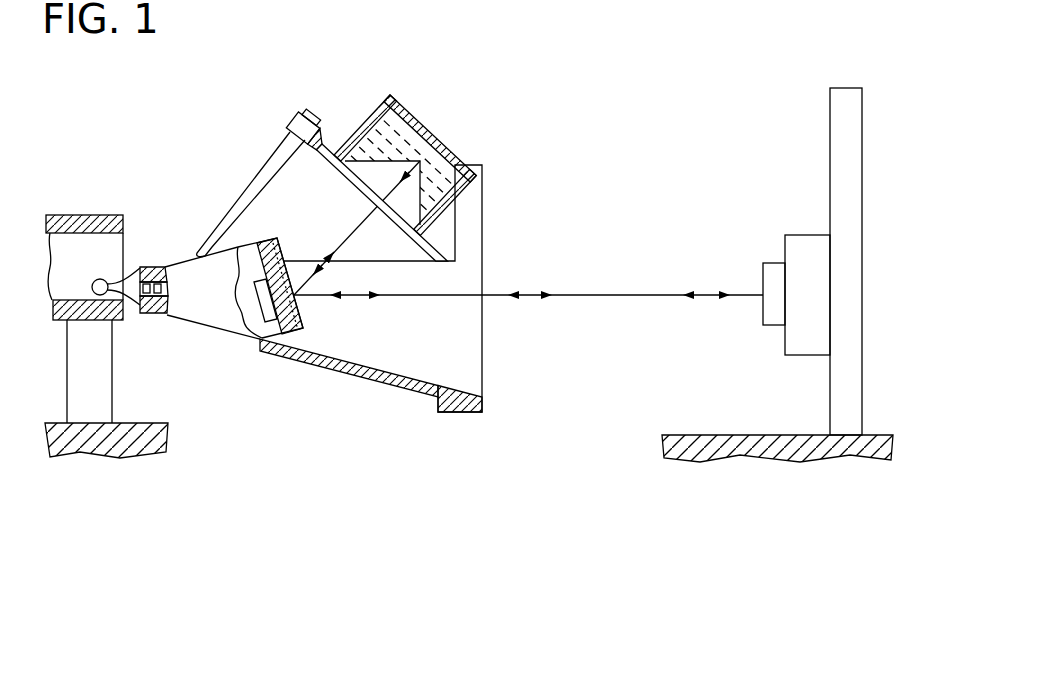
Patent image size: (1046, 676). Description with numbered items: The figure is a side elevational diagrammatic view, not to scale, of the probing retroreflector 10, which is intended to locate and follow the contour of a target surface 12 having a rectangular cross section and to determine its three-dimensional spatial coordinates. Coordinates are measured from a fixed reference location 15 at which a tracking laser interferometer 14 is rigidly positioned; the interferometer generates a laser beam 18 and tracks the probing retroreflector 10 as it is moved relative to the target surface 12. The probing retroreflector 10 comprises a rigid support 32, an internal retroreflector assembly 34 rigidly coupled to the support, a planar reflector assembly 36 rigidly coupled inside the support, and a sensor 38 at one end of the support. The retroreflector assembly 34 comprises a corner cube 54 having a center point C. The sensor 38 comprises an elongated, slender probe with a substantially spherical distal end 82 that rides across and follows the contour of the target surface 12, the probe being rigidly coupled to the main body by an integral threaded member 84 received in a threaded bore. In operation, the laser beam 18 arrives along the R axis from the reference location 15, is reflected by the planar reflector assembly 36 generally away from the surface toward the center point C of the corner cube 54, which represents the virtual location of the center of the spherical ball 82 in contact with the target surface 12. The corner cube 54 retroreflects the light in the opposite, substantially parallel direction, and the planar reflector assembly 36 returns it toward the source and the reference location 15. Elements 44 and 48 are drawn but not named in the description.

The probing retroreflector 10 is at (423, 257).
The target surface 12 is at (106, 258).
The tracking laser interferometer 14 is at (797, 225).
The reference location 15 is at (872, 403).
The laser beam 18 is at (648, 298).
The rigid support 32 is at (395, 395).
The internal retroreflector assembly 34 is at (348, 118).
The planar reflector assembly 36 is at (278, 332).
The sensor 38 is at (130, 310).
The base block 44 is at (484, 380).
The housing 48 is at (462, 340).
The corner cube 54 is at (403, 157).
The spherical distal end 82 is at (96, 281).
The integral threaded member 84 is at (161, 316).
The center point C is at (416, 143).
The R axis R is at (618, 288).